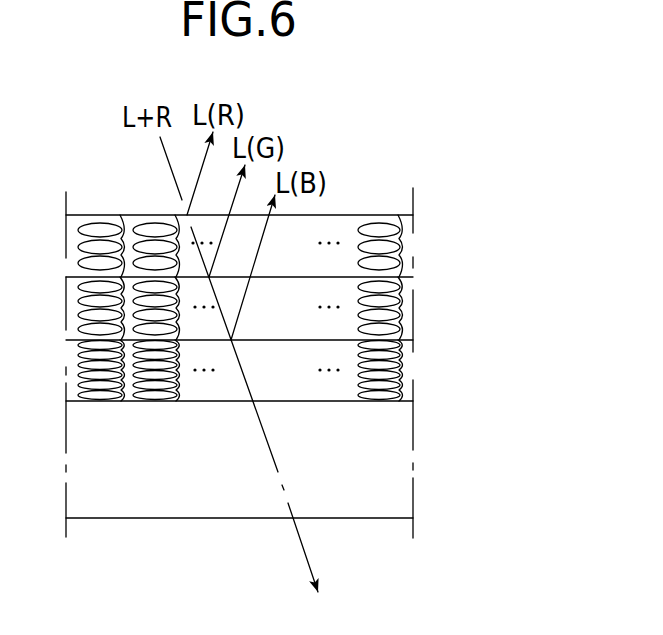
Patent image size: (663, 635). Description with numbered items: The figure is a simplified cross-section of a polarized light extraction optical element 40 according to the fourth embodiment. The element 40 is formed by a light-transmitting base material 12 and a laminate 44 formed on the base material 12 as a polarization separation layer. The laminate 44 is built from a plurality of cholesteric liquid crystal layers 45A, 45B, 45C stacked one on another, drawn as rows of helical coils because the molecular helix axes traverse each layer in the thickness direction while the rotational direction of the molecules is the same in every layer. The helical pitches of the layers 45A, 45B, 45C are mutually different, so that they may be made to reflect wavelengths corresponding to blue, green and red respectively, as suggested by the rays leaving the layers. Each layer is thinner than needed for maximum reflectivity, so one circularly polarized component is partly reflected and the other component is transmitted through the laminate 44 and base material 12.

The polarized light extraction optical element 40 is at (378, 158).
The laminate 44 is at (502, 225).
The liquid crystal layer 45C is at (405, 243).
The liquid crystal layer 45B is at (405, 308).
The liquid crystal layer 45A is at (405, 371).
The light-transmitting base material 12 is at (405, 443).